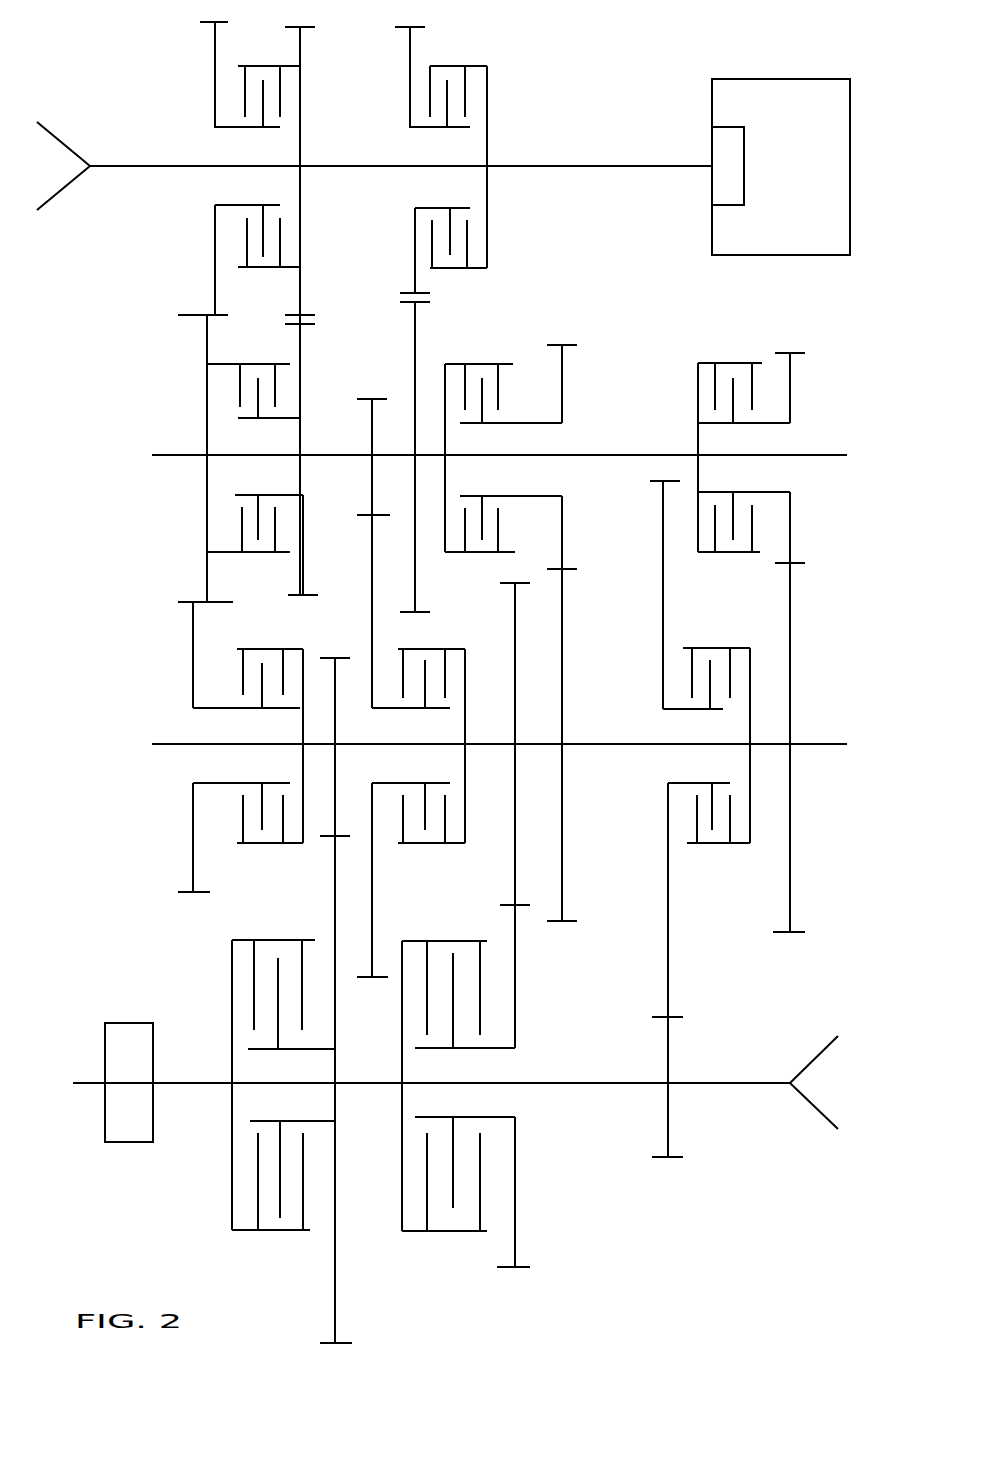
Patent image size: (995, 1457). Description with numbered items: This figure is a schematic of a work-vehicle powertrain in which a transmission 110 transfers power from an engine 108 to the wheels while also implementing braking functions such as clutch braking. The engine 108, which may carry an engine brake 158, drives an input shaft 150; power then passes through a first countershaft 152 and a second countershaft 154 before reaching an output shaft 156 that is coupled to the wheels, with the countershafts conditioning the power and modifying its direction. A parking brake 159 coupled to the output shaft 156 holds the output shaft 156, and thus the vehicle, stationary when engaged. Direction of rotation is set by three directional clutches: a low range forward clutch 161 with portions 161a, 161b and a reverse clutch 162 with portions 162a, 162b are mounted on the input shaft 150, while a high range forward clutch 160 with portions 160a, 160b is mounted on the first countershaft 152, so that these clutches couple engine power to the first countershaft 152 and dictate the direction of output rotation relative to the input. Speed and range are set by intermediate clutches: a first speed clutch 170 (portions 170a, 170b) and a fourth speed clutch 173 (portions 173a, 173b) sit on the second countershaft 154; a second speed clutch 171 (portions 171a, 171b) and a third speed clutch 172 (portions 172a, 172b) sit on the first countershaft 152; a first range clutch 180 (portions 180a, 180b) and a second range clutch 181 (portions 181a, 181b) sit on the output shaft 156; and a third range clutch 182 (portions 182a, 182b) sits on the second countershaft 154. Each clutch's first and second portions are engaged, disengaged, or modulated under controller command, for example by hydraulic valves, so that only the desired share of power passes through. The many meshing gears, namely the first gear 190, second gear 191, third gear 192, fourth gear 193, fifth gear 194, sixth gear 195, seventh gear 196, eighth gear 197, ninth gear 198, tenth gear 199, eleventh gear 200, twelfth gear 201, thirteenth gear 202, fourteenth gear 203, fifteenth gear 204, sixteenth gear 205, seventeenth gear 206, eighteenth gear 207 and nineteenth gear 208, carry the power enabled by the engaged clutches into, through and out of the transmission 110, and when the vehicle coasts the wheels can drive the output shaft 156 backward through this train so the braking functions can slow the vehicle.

The transmission 110 is at (95, 62).
The engine 108 is at (780, 79).
The input shaft 150 is at (680, 166).
The first countershaft 152 is at (648, 455).
The second countershaft 154 is at (815, 744).
The output shaft 156 is at (765, 1083).
The engine brake 158 is at (745, 167).
The parking brake 159 is at (128, 1023).
The high range forward directional clutch 160 is at (222, 369).
The first portion of high range directional clutch 160a is at (227, 362).
The second portion of high range directional clutch 160b is at (262, 420).
The low range forward directional clutch 161 is at (460, 143).
The first portion of low range directional clutch 161a is at (490, 115).
The second portion of low range directional clutch 161b is at (428, 130).
The reverse directional clutch 162 is at (253, 89).
The first portion of reverse clutch 162a is at (228, 130).
The second portion of reverse clutch 162b is at (303, 72).
The first speed clutch 170 is at (428, 707).
The first portion of first speed clutch 170a is at (418, 710).
The second portion of first speed clutch 170b is at (466, 695).
The second speed clutch 171 is at (730, 422).
The first portion of second speed clutch 171a is at (700, 363).
The second portion of second speed clutch 171b is at (742, 423).
The third speed clutch 172 is at (520, 414).
The first portion of third speed clutch 172a is at (452, 364).
The second portion of third speed clutch 172b is at (513, 425).
The fourth speed clutch 173 is at (200, 723).
The first portion of fourth speed clutch 173a is at (215, 710).
The second portion of fourth speed clutch 173b is at (252, 649).
The first range clutch 180 is at (258, 1068).
The first portion of first range clutch 180a is at (275, 940).
The second portion of first range clutch 180b is at (293, 1050).
The second range clutch 181 is at (468, 1044).
The first portion of second range clutch 181a is at (445, 940).
The second portion of second range clutch 181b is at (465, 1050).
The third range clutch 182 is at (701, 705).
The first portion of third range clutch 182a is at (705, 710).
The second portion of third range clutch 182b is at (720, 647).
The first gear 190 is at (213, 48).
The second gear 191 is at (300, 283).
The third gear 192 is at (410, 78).
The fourth gear 193 is at (205, 325).
The fifth gear 194 is at (302, 345).
The sixth gear 195 is at (373, 420).
The seventh gear 196 is at (415, 330).
The eighth gear 197 is at (563, 364).
The ninth gear 198 is at (790, 385).
The tenth gear 199 is at (193, 622).
The eleventh gear 200 is at (352, 660).
The twelfth gear 201 is at (373, 580).
The thirteenth gear 202 is at (517, 597).
The fourteenth gear 203 is at (563, 605).
The fifteenth gear 204 is at (663, 520).
The sixteenth gear 205 is at (790, 585).
The seventeenth gear 206 is at (335, 885).
The eighteenth gear 207 is at (518, 930).
The nineteenth gear 208 is at (668, 1045).